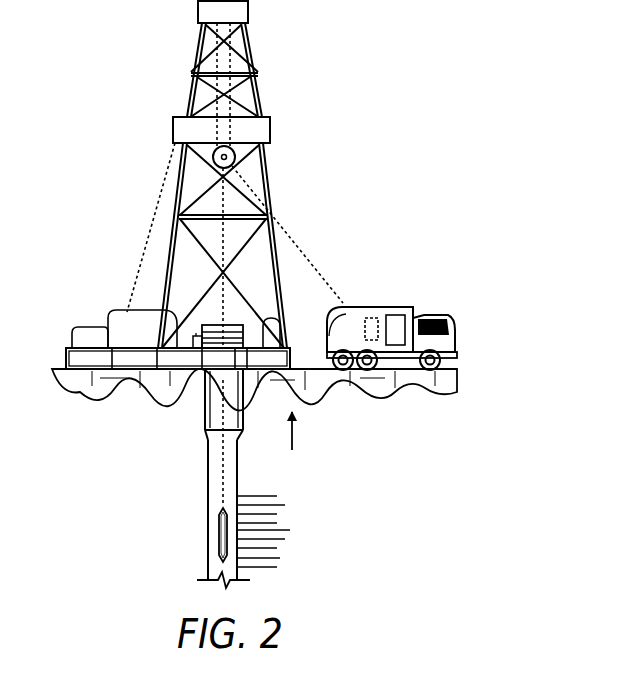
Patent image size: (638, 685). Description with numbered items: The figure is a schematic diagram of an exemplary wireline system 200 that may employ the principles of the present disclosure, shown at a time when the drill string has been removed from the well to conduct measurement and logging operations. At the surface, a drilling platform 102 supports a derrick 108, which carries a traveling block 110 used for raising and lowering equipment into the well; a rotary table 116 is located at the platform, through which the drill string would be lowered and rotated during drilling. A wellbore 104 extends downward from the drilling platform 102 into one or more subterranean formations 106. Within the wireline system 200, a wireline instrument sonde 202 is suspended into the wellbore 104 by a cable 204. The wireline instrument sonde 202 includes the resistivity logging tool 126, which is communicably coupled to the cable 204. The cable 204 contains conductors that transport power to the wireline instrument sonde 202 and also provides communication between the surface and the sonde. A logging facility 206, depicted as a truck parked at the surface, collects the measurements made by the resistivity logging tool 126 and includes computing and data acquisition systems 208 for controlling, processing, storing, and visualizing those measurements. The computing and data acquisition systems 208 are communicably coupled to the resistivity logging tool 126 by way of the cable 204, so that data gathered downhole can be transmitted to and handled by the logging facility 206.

The wireline system 200 is at (360, 121).
The drilling platform 102 is at (66, 357).
The wellbore 104 is at (240, 465).
The subterranean formations 106 is at (293, 490).
The derrick 108 is at (252, 59).
The traveling block 110 is at (237, 158).
The rotary table 116 is at (232, 325).
The resistivity logging tool 126 is at (188, 527).
The wireline instrument sonde 202 is at (216, 518).
The cable 204 is at (300, 252).
The logging facility 206 is at (418, 314).
The computing and data acquisition systems 208 is at (372, 318).